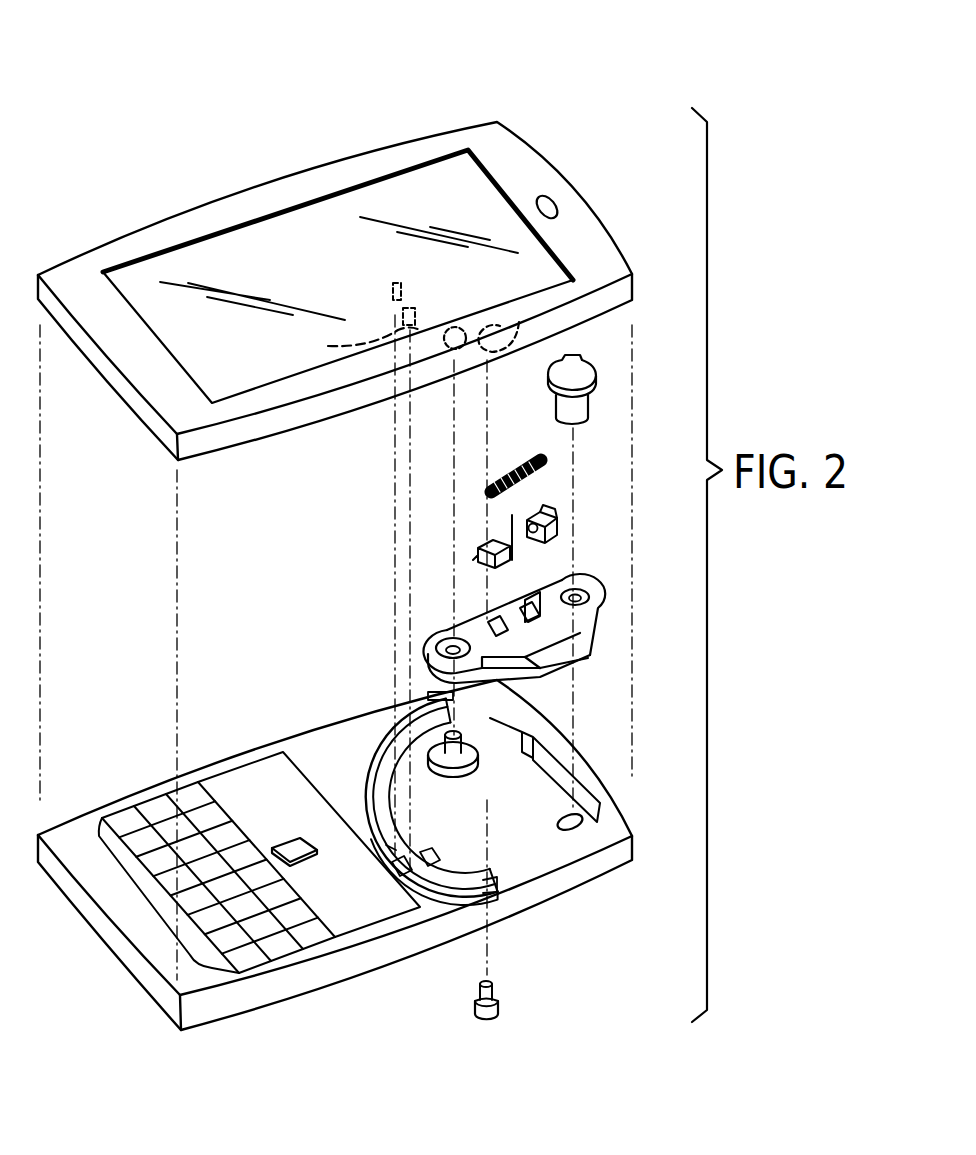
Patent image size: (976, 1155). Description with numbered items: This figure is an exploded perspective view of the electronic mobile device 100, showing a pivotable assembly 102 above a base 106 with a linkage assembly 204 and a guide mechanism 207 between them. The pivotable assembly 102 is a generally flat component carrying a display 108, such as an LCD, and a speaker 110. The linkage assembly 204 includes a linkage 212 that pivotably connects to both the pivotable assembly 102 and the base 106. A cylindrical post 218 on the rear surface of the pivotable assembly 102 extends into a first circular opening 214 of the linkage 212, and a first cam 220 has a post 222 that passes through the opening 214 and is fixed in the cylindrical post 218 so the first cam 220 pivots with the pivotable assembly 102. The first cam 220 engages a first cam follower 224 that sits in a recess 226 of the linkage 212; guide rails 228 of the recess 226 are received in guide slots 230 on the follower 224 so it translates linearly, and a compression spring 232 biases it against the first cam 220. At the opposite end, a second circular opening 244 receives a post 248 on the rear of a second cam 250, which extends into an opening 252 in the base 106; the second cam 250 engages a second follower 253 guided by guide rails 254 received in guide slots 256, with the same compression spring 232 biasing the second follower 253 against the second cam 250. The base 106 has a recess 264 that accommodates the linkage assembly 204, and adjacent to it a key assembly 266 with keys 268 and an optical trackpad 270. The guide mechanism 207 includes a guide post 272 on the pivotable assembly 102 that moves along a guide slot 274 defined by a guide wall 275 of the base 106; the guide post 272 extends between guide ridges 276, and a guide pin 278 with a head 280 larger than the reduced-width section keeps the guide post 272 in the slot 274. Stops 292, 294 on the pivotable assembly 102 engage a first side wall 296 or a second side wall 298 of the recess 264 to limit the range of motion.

The electronic mobile device 100 is at (130, 118).
The pivotable assembly 102 is at (226, 199).
The base 106 is at (330, 995).
The display 108 is at (313, 216).
The speaker 110 is at (560, 205).
The linkage assembly 204 is at (590, 664).
The guide mechanism 207 is at (375, 728).
The linkage 212 is at (590, 638).
The first circular opening 214 is at (448, 645).
The cylindrical post 218 is at (455, 326).
The first cam 220 is at (453, 776).
The post 222 is at (462, 737).
The first cam follower 224 is at (488, 537).
The recess 226 is at (537, 557).
The guide rails 228 is at (490, 615).
The guide slots 230 is at (505, 595).
The compression spring 232 is at (515, 460).
The second circular opening 244 is at (585, 592).
The post 248 is at (593, 403).
The second cam 250 is at (598, 358).
The opening 252 is at (582, 818).
The second follower 253 is at (553, 520).
The guide rails 254 is at (547, 583).
The guide slots 256 is at (512, 515).
The recess 264 is at (517, 857).
The key assembly 266 is at (147, 795).
The keys 268 is at (170, 935).
The optical trackpad 270 is at (284, 838).
The guide post 272 is at (519, 322).
The guide slot 274 is at (383, 750).
The guide wall 275 is at (378, 778).
The guide ridges 276 is at (400, 878).
The guide pin 278 is at (497, 995).
The head 280 is at (487, 1020).
The stop 292 is at (392, 289).
The stop 294 is at (352, 344).
The first side wall 296 is at (428, 853).
The second side wall 298 is at (540, 752).